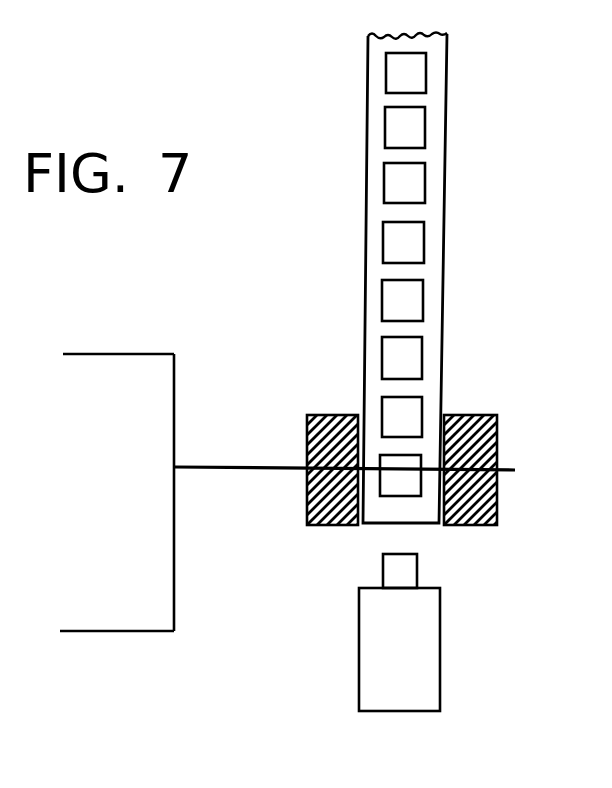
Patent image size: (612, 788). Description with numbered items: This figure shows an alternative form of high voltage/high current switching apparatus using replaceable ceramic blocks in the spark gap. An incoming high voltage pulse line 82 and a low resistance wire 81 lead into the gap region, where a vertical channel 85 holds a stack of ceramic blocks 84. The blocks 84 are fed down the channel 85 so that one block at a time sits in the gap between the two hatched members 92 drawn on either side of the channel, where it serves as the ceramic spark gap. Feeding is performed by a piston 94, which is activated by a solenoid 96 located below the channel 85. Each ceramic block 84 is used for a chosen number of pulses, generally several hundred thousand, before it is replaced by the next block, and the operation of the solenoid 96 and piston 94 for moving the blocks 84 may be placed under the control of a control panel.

The low resistance wire 81 is at (123, 354).
The incoming high voltage pulse line 82 is at (103, 631).
The ceramic block 84 is at (405, 183).
The channel 85 is at (377, 150).
The magnetic core halves 92 is at (488, 432).
The piston 94 is at (417, 565).
The solenoid 96 is at (440, 656).